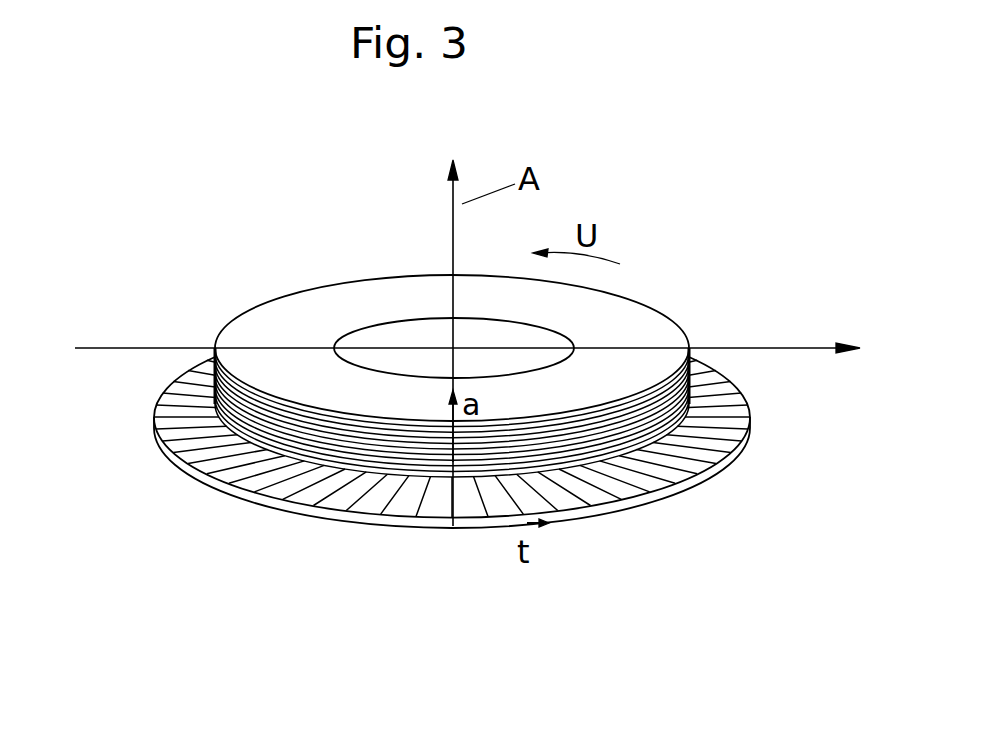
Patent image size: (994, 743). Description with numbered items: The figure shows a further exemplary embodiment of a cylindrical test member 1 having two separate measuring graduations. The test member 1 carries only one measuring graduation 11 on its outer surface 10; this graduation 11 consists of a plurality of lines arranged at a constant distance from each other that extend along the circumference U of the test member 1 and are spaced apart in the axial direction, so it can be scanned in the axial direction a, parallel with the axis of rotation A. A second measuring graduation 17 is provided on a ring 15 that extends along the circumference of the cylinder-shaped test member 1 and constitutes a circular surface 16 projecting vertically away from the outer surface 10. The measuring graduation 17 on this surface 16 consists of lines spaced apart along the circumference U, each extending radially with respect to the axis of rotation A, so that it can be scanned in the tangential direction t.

The cylindrical test member 1 is at (628, 302).
The outer surface 10 is at (338, 283).
The measuring graduation 11 is at (290, 430).
The ring 15 is at (727, 455).
The circular surface 16 is at (635, 487).
The second measuring graduation 17 is at (588, 495).